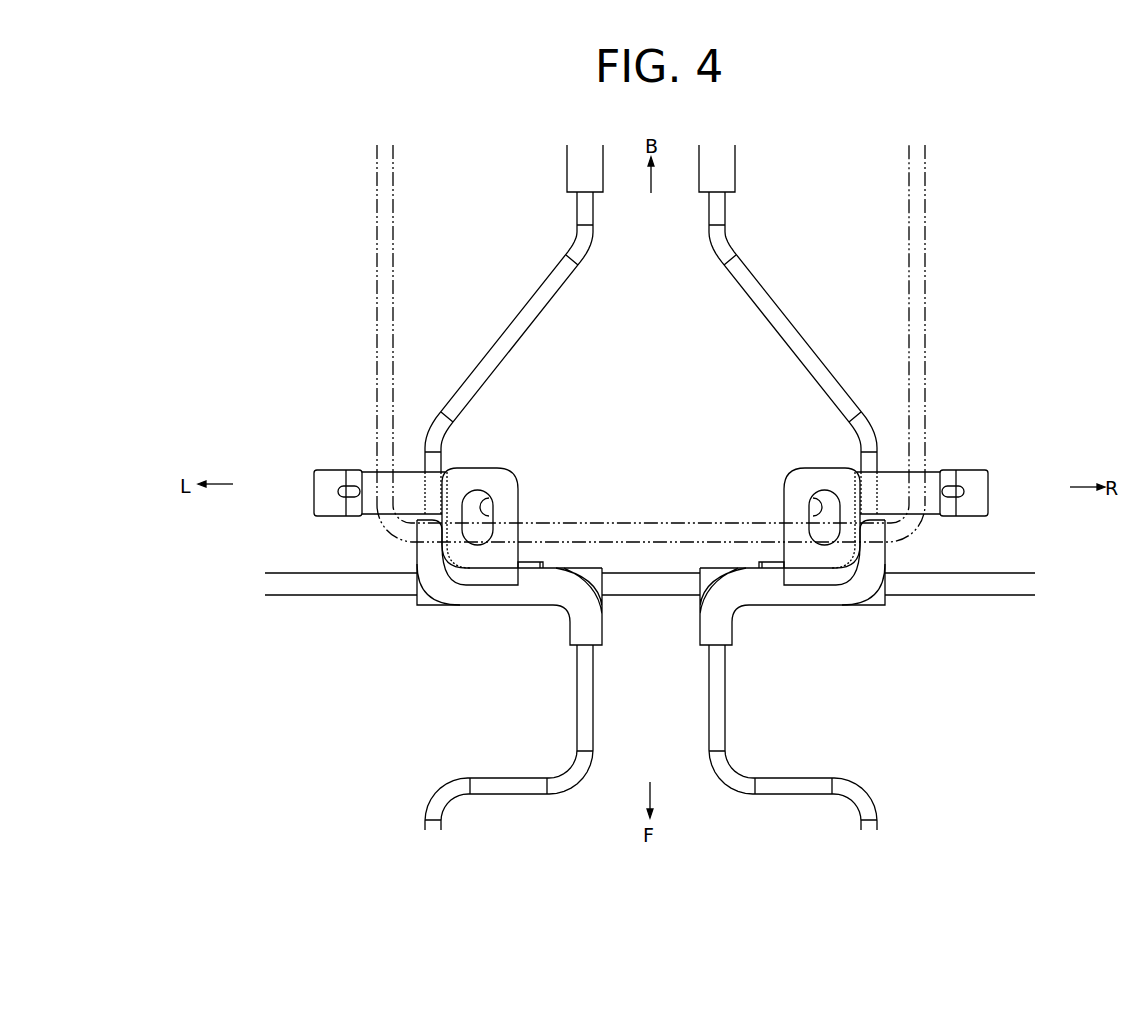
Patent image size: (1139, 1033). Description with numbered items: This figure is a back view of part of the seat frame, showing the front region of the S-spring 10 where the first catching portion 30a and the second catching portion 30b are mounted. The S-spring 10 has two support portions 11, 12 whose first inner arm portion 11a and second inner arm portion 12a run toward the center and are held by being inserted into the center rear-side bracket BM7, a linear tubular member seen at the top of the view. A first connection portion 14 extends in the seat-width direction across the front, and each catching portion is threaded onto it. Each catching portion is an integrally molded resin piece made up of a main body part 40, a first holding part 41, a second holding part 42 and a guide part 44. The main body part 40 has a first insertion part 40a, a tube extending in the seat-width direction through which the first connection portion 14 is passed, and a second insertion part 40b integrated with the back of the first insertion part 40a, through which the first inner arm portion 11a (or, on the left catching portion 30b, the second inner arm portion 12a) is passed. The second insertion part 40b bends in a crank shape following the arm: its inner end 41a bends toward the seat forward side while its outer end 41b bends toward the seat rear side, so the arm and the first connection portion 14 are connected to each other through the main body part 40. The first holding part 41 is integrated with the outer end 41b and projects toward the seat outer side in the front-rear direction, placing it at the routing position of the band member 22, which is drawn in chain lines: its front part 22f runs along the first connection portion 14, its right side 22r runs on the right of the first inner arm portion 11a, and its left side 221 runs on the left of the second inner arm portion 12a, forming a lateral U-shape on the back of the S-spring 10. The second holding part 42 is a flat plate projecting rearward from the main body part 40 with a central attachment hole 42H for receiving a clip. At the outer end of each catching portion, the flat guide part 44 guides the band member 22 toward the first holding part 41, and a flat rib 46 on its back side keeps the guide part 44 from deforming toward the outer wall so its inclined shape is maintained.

The S-spring 10 is at (651, 737).
The support portion 11 is at (765, 737).
The first inner arm portion 11a is at (807, 787).
The support portion 12 is at (532, 737).
The second inner arm portion 12a is at (495, 787).
The first connection portion 14 is at (983, 576).
The band member 22 is at (640, 343).
The left side 221 is at (376, 301).
The right side 22r is at (927, 303).
The front part 22f is at (655, 522).
The first catching portion 30a is at (803, 616).
The second catching portion 30b is at (499, 616).
The main body part 40 is at (650, 612).
The first insertion part 40a is at (423, 604).
The second insertion part 40b is at (463, 604).
The first holding part 41 is at (404, 471).
The inner end 41a is at (568, 638).
The outer end 41b is at (458, 469).
The second holding part 42 is at (490, 468).
The attachment hole 42H is at (486, 497).
The guide part 44 is at (333, 469).
The rib 46 is at (351, 498).
The rear-side bracket BM7 is at (733, 172).